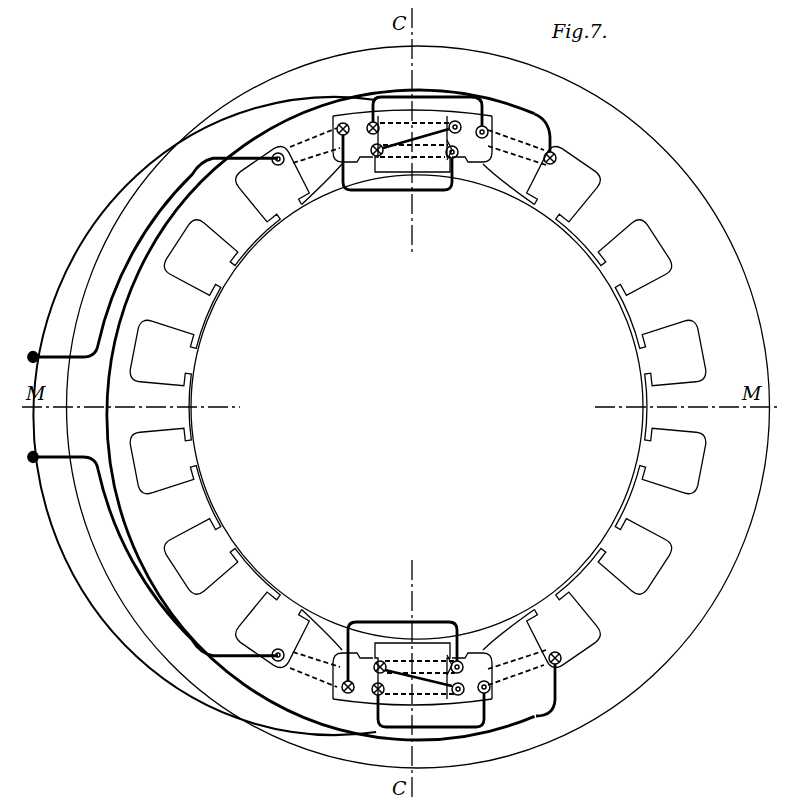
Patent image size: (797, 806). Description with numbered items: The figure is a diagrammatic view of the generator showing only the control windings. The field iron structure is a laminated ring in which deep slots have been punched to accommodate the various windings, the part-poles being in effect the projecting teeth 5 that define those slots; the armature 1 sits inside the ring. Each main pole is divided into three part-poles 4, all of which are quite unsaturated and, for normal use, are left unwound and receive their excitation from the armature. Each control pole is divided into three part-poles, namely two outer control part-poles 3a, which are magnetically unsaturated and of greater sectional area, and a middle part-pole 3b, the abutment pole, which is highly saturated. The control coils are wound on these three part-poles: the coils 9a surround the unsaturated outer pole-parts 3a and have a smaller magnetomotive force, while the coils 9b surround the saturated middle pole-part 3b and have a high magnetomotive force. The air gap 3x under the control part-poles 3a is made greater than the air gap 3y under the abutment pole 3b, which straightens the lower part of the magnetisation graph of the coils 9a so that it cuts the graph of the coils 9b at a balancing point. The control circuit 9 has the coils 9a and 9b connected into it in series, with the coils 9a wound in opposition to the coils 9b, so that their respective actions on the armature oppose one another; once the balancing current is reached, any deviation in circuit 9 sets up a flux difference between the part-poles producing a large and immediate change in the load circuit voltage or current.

The rotor 1 is at (417, 407).
The outer control part-pole 3a is at (313, 172).
The middle part-pole (abutment pole) 3b is at (428, 163).
The air gap under control part-poles 3x is at (325, 183).
The air gap under abutment pole 3y is at (403, 170).
The main part-pole 4 is at (418, 407).
The stator tooth 5 is at (247, 227).
The control circuit 9 is at (8, 354).
The control coils on outer part-poles 9a is at (295, 152).
The control coils on abutment pole 9b is at (398, 140).